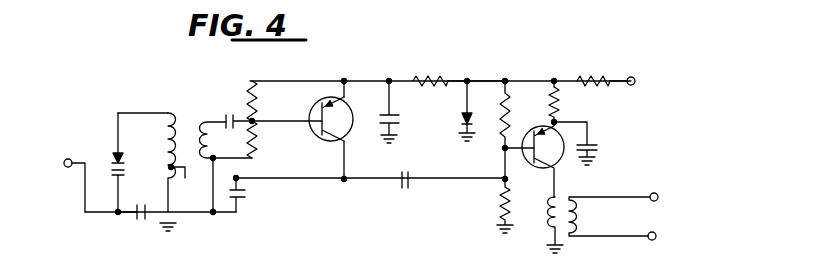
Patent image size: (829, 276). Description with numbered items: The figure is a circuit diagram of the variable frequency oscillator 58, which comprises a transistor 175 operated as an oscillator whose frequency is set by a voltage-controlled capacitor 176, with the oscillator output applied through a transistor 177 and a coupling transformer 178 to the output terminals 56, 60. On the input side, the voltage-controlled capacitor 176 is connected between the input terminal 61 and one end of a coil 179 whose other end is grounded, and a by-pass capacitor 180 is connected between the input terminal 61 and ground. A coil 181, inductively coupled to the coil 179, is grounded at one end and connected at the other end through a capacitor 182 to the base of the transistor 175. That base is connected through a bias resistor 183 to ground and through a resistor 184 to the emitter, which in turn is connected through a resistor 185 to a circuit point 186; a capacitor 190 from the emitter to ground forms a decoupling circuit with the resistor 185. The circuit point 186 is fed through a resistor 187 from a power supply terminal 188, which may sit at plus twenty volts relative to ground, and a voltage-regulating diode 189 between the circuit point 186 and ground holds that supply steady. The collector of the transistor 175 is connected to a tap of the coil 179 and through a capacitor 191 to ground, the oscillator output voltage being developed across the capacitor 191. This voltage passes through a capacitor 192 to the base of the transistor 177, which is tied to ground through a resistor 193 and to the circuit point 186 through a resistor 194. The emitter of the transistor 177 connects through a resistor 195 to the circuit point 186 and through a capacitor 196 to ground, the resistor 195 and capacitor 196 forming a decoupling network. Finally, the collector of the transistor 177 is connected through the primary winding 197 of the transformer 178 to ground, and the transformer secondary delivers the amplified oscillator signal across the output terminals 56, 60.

The variable frequency oscillator 58 is at (116, 86).
The input terminal 61 is at (66, 170).
The voltage-controlled capacitor 176 is at (113, 155).
The coil 179 is at (168, 113).
The by-pass capacitor 180 is at (133, 218).
The coil 181 is at (207, 122).
The capacitor 182 is at (254, 118).
The bias resistor 183 is at (253, 150).
The resistor 184 is at (258, 99).
The transistor 175 is at (348, 127).
The capacitor 191 is at (245, 198).
The capacitor 190 is at (397, 122).
The resistor 185 is at (436, 79).
The circuit point 186 is at (470, 79).
The voltage-regulating diode 189 is at (459, 121).
The capacitor 192 is at (410, 176).
The resistor 194 is at (512, 122).
The resistor 193 is at (497, 207).
The resistor 195 is at (557, 110).
The resistor 187 is at (598, 80).
The power supply terminal 188 is at (634, 79).
The transistor 177 is at (564, 138).
The capacitor 196 is at (600, 148).
The coupling transformer 178 is at (571, 192).
The primary winding 197 is at (548, 218).
The output terminal 60 is at (659, 196).
The output terminal 56 is at (656, 235).